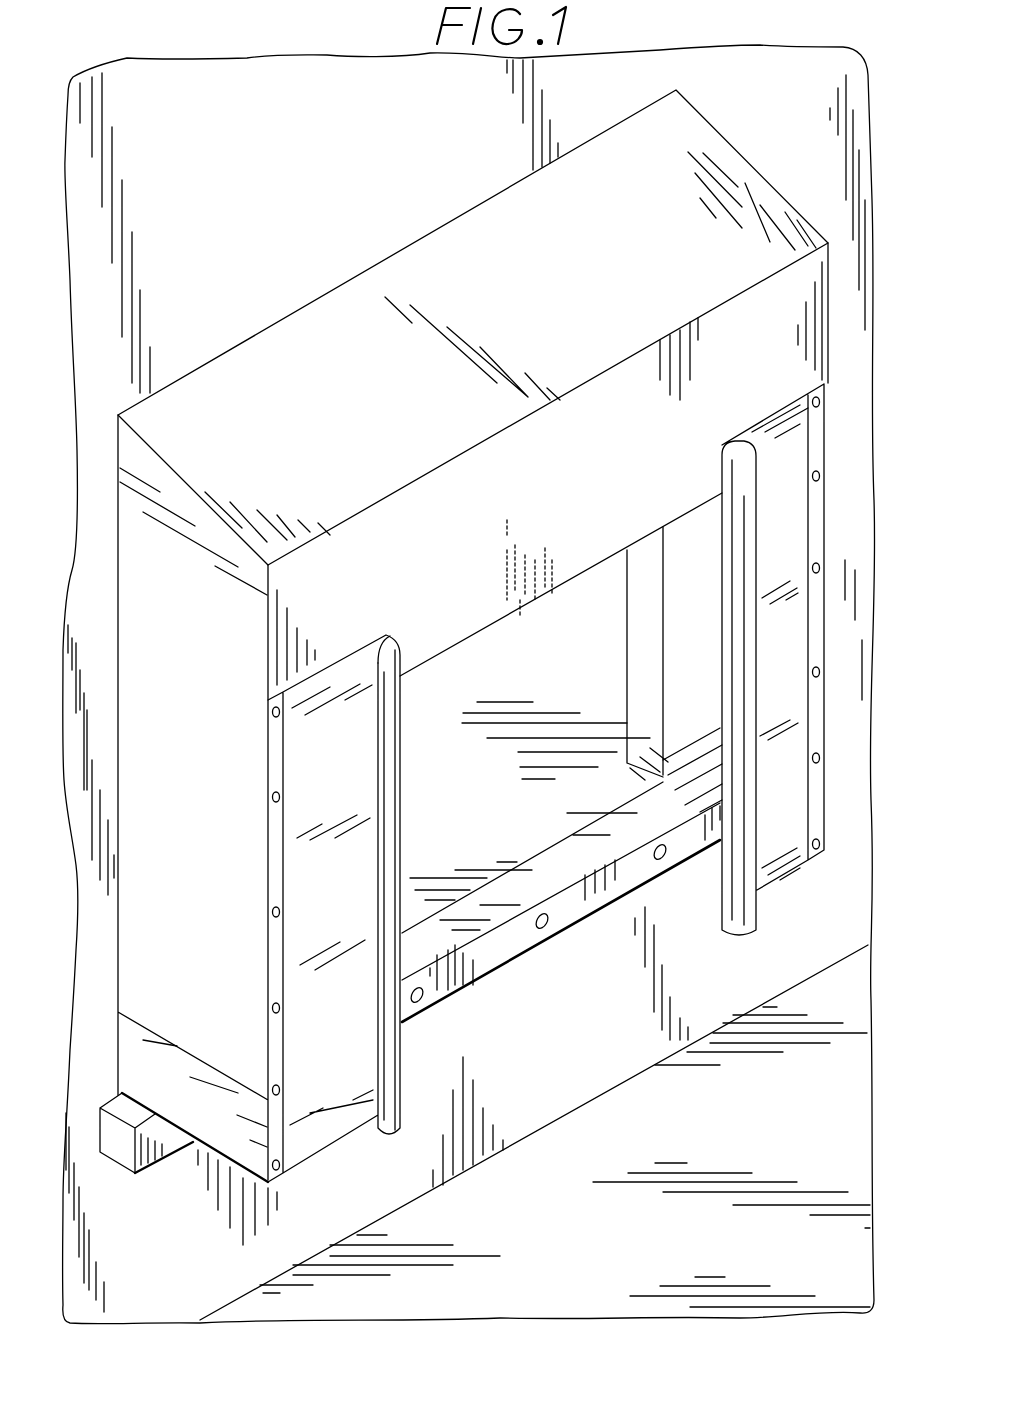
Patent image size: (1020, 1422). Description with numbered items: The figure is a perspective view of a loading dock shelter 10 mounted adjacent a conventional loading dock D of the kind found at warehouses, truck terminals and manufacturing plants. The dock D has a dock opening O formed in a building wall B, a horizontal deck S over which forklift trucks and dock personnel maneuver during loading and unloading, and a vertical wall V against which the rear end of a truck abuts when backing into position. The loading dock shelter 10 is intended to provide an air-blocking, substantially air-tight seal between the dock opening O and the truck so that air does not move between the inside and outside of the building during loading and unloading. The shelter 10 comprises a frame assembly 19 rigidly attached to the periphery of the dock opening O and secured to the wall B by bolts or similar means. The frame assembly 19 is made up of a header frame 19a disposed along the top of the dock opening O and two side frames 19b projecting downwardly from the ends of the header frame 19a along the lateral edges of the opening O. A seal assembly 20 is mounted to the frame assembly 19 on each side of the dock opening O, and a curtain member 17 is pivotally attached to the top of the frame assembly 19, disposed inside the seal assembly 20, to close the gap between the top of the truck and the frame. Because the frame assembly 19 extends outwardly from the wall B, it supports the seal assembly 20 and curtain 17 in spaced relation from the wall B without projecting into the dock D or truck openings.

The loading dock shelter 10 is at (878, 413).
The curtain member 17 is at (446, 647).
The frame assembly 19 is at (464, 636).
The header frame 19a is at (402, 466).
The side frames 19b is at (226, 694).
The seal assembly 20 is at (350, 901).
The building wall B is at (314, 221).
The loading dock D is at (838, 298).
The dock opening O is at (546, 657).
The deck S is at (516, 838).
The vertical wall V is at (516, 953).